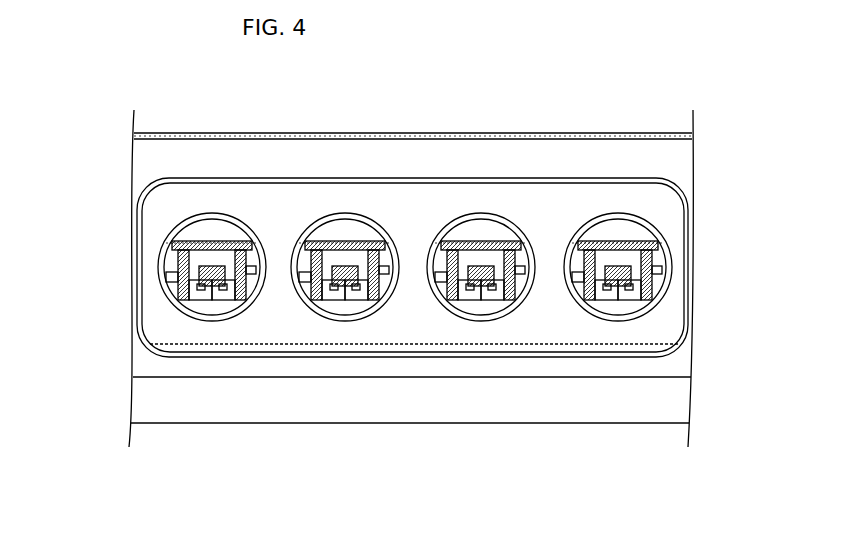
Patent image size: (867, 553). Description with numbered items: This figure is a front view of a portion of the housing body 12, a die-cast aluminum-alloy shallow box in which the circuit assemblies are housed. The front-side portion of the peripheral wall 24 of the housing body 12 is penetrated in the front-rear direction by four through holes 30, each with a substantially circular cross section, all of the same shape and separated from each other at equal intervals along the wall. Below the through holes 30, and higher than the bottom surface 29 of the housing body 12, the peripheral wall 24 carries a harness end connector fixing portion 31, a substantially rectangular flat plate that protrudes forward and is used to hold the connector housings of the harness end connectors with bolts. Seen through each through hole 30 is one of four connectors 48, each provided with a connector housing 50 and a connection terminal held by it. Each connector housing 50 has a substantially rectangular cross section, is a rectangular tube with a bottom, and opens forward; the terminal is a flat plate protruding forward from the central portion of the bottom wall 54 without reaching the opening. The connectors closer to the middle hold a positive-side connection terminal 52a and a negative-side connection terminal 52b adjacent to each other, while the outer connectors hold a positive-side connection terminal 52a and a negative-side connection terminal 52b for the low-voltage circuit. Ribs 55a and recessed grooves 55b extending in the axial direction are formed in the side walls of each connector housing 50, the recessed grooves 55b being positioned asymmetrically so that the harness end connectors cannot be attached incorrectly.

The housing body 12 is at (413, 127).
The peripheral wall 24 is at (167, 322).
The bottom surface 29 is at (620, 425).
The through hole 30 is at (180, 238).
The harness end connector fixing portion 31 is at (495, 365).
The connector 48 is at (404, 288).
The connector housing 50 is at (515, 278).
The positive-side connection terminal 52a is at (480, 278).
The negative-side connection terminal 52b is at (198, 262).
The bottom wall 54 is at (493, 262).
The rib 55a is at (190, 275).
The recessed groove 55b is at (229, 280).